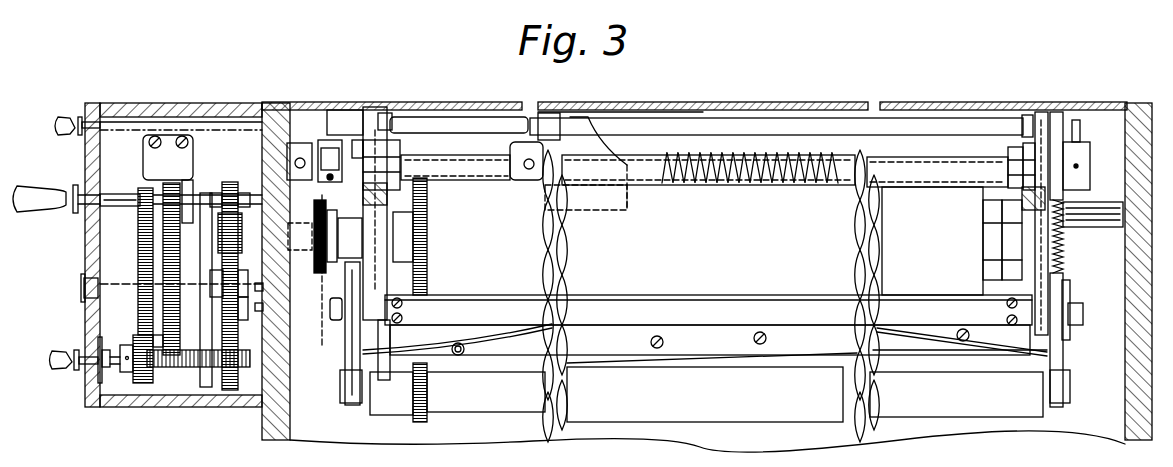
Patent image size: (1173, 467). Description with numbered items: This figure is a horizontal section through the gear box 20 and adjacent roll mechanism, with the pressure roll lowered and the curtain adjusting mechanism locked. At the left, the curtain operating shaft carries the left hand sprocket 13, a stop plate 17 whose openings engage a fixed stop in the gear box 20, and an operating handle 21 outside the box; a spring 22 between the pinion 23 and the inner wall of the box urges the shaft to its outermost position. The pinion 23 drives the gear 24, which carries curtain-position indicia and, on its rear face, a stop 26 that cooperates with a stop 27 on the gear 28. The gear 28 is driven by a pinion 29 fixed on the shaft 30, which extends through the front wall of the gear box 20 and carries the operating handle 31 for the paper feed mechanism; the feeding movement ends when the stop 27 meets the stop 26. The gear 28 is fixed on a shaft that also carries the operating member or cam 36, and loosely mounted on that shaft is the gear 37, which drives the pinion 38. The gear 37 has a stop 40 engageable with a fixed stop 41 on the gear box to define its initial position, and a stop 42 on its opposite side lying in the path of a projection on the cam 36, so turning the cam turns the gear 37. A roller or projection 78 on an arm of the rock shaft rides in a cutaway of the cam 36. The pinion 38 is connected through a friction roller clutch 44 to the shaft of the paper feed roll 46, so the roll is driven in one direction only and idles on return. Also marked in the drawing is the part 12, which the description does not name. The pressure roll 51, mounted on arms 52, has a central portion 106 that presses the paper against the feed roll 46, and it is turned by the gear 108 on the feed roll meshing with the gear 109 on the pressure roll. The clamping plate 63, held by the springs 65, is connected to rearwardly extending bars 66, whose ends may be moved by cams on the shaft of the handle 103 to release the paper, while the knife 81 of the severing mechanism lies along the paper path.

The left hand sprocket 13 is at (443, 104).
The gear box 20 is at (98, 243).
The handle 103 is at (70, 106).
The operating handle 31 is at (45, 193).
The shaft 30 is at (118, 194).
The pinion 29 is at (172, 186).
The gear 24 is at (143, 265).
The gear 28 is at (165, 250).
The stop 26 is at (153, 340).
The stop 27 is at (155, 290).
The stop plate 17 is at (82, 285).
The operating handle 21 is at (60, 352).
The pinion 23 is at (138, 385).
The spring 22 is at (178, 370).
The operating member or cam 36 is at (204, 388).
The pinion 38 is at (232, 187).
The gear 37 is at (228, 183).
The roller or projection 78 is at (214, 193).
The stop or projection 42 is at (212, 283).
The frame 12 is at (320, 190).
The friction roller clutch 44 is at (316, 270).
The projection or stop 40 is at (273, 287).
The fixed stop 41 is at (273, 307).
The gear 108 is at (427, 235).
The bars 66 is at (1030, 272).
The paper feed roll 46 is at (937, 203).
The clamping plate 63 is at (690, 307).
The springs 65 is at (478, 345).
The knife 81 is at (720, 345).
The central portion 106 is at (710, 415).
The pressure roll 51 is at (393, 405).
The gear 109 is at (420, 420).
The arms 52 is at (355, 398).